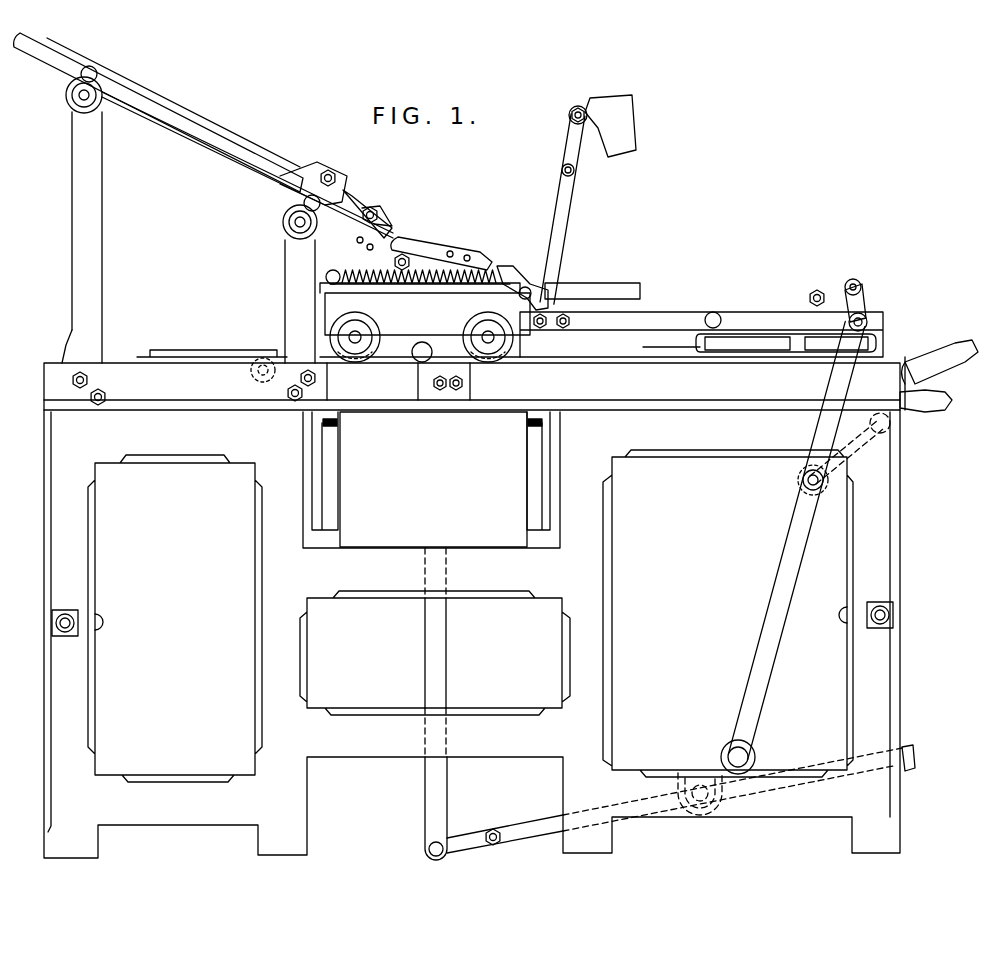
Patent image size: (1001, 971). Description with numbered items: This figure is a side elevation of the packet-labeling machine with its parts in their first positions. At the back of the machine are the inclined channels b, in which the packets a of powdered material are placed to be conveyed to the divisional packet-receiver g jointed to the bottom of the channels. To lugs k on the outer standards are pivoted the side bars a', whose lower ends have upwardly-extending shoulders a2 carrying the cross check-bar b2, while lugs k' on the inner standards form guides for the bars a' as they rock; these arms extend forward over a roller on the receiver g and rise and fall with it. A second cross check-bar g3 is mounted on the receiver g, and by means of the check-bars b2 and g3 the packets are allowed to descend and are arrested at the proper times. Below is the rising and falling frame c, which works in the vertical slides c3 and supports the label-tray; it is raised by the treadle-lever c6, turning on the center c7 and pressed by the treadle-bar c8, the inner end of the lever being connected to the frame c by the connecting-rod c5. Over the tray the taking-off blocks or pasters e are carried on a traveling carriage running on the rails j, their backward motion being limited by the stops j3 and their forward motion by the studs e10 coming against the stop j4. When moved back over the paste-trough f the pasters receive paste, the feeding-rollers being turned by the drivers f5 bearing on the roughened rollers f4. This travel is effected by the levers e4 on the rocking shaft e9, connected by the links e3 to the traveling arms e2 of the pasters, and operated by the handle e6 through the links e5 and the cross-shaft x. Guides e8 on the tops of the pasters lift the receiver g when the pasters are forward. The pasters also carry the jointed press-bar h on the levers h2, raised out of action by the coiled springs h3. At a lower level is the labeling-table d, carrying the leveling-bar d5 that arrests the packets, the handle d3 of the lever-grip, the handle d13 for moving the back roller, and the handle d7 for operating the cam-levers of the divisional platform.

The rails j is at (474, 607).
The stops j3 is at (58, 343).
The stop j4 is at (468, 395).
The rising and falling frame c is at (433, 479).
The vertical slides c3 is at (313, 485).
The connecting-rod c5 is at (435, 653).
The treadle-lever c6 is at (525, 822).
The center c7 is at (702, 797).
The treadle-bar c8 is at (912, 752).
The lugs k is at (70, 214).
The lugs k' is at (279, 279).
The packets a is at (158, 112).
The side bars a' is at (237, 131).
The inclined channels b is at (140, 104).
The cross check-bar b2 is at (318, 174).
The shoulders a2 is at (366, 217).
The cross check-bar g3 is at (380, 212).
The divisional packet-receiver g is at (440, 250).
The drivers f5 is at (395, 305).
The coiled springs h3 is at (497, 264).
The levers h2 is at (563, 205).
The press-bar h is at (610, 126).
The pasters e is at (425, 322).
The studs e10 is at (412, 358).
The guides e8 is at (628, 284).
The links e3 is at (750, 313).
The traveling arms e2 is at (688, 313).
The labeling-table d is at (644, 353).
The handle d3 is at (862, 286).
The leveling-bar d5 is at (821, 289).
The handle d13 is at (914, 358).
The handle d7 is at (952, 400).
The levers e4 is at (810, 434).
The rocking shaft e9 is at (757, 752).
The cross-shaft x is at (800, 482).
The links e5 is at (846, 452).
The handle e6 is at (892, 427).
The paste-trough f is at (206, 349).
The roughened rollers f4 is at (258, 381).